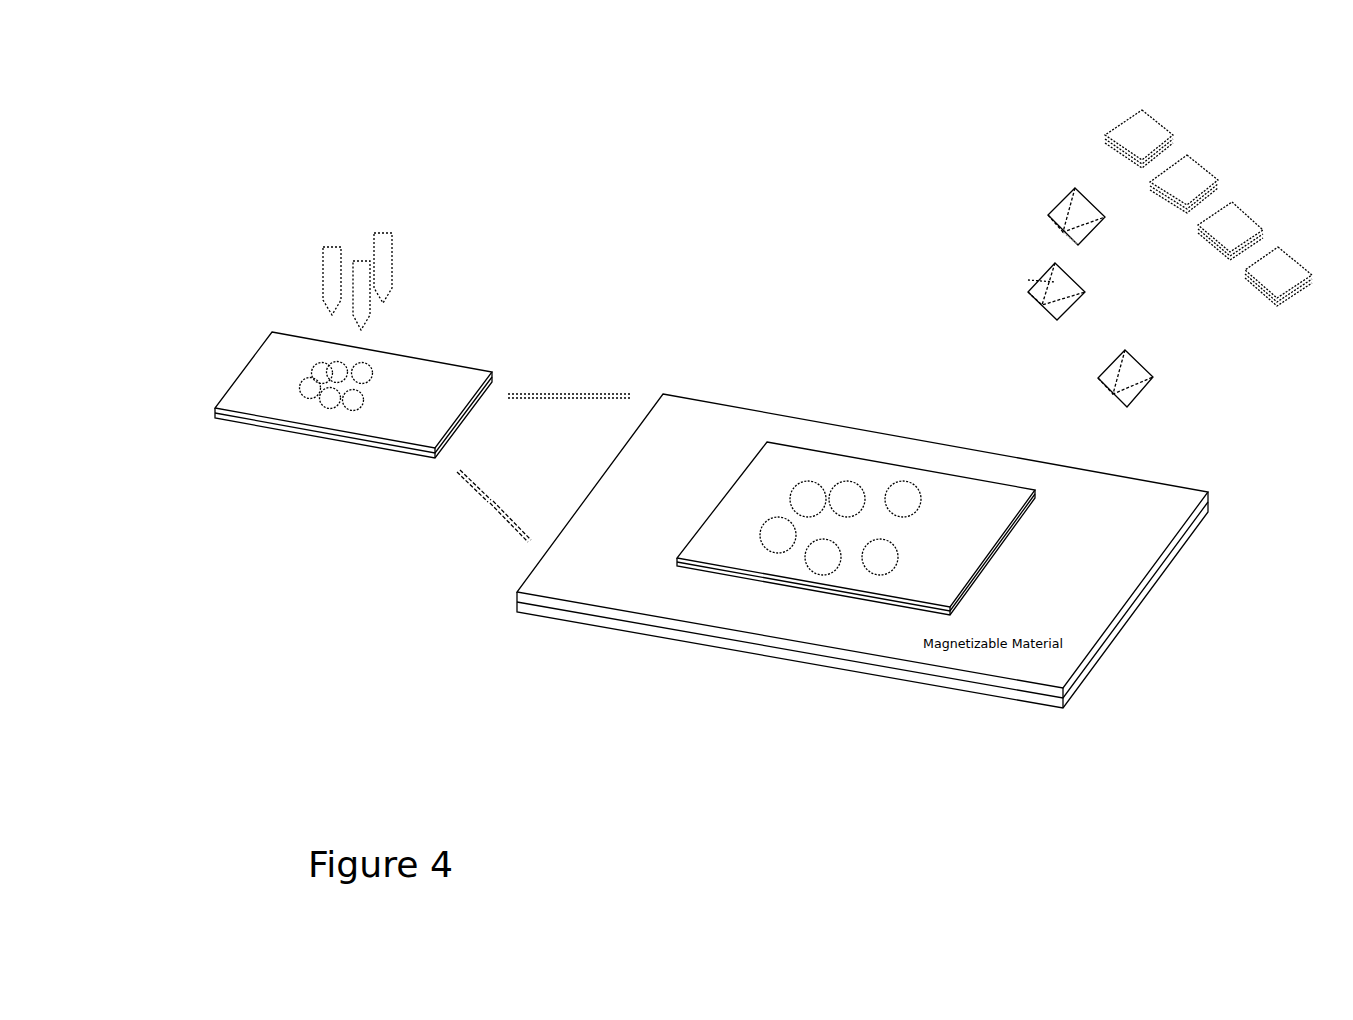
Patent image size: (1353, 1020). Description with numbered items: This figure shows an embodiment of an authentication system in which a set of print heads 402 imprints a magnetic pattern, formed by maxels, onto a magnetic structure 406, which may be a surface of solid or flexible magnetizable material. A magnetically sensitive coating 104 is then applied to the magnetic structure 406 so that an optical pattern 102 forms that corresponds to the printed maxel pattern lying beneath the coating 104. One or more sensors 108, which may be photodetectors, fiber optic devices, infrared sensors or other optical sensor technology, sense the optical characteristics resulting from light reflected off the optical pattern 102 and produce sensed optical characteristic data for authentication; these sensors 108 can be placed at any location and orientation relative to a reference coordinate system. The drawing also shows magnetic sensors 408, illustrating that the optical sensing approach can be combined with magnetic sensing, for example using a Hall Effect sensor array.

The optical pattern 102 is at (778, 489).
The magnetically sensitive coating 104 is at (985, 503).
The sensors 108 is at (1077, 207).
The print heads 402 is at (393, 255).
The magnetic structure 406 is at (212, 378).
The magnetic sensors 408 is at (1133, 128).